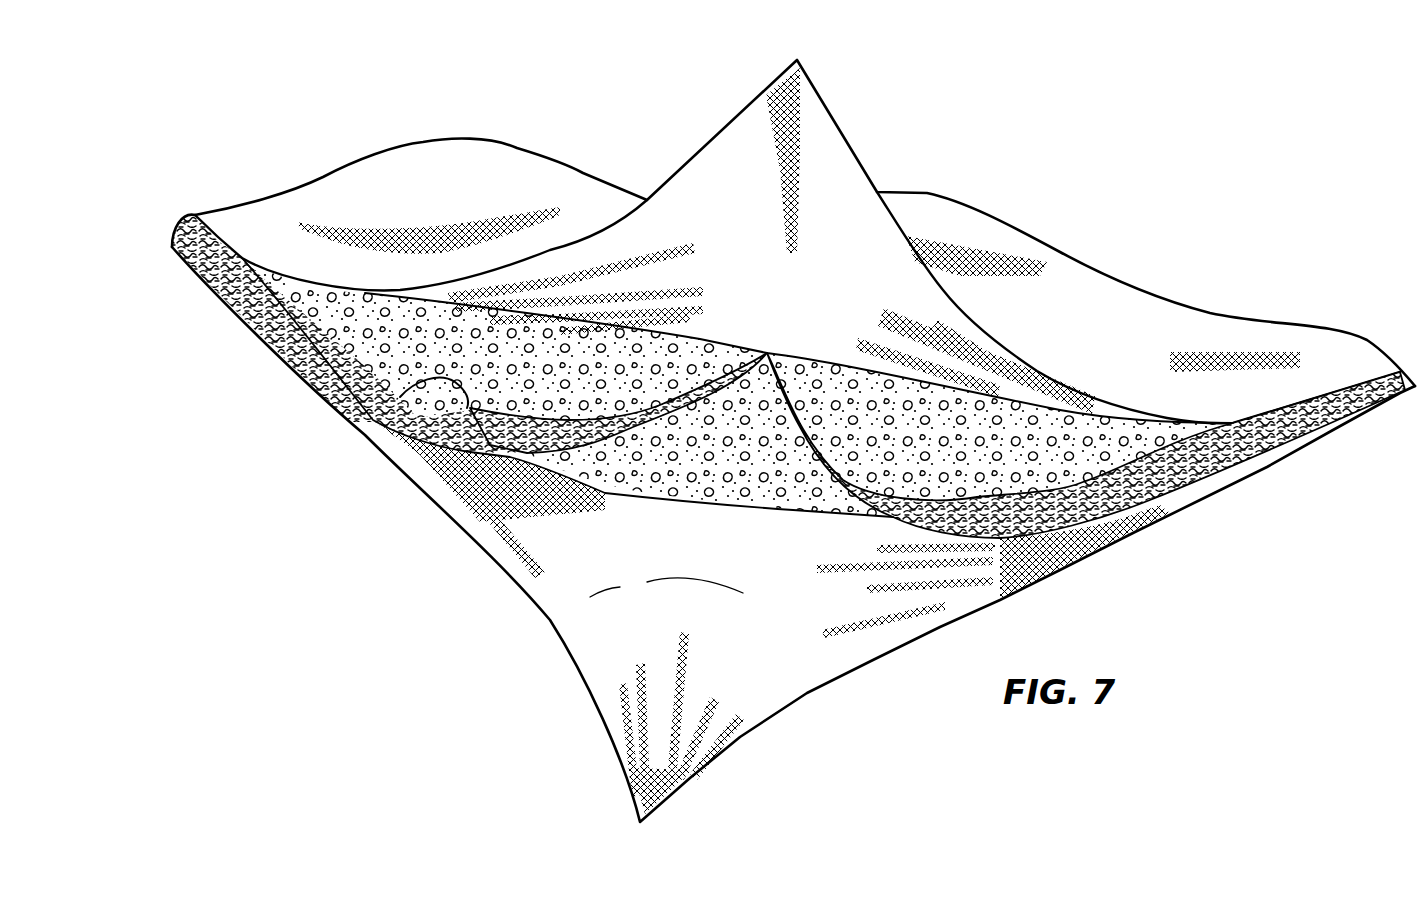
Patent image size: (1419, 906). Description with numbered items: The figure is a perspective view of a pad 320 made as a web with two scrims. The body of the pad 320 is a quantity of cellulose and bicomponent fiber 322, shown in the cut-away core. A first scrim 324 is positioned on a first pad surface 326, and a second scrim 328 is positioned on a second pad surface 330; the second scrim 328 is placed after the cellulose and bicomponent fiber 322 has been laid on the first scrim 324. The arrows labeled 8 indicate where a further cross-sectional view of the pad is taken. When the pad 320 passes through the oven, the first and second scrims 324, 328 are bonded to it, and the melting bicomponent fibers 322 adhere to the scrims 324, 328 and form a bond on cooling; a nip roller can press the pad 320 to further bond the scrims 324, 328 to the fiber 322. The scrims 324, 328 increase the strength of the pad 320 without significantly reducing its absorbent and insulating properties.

The pad 320 is at (1236, 176).
The second scrim 328 is at (1143, 332).
The reinforcing mesh hatch 8 is at (1058, 272).
The second pad surface 330 is at (400, 397).
The cellulose and bicomponent fiber 322 is at (1087, 503).
The first pad surface 326 is at (1000, 537).
The first scrim 324 is at (780, 690).